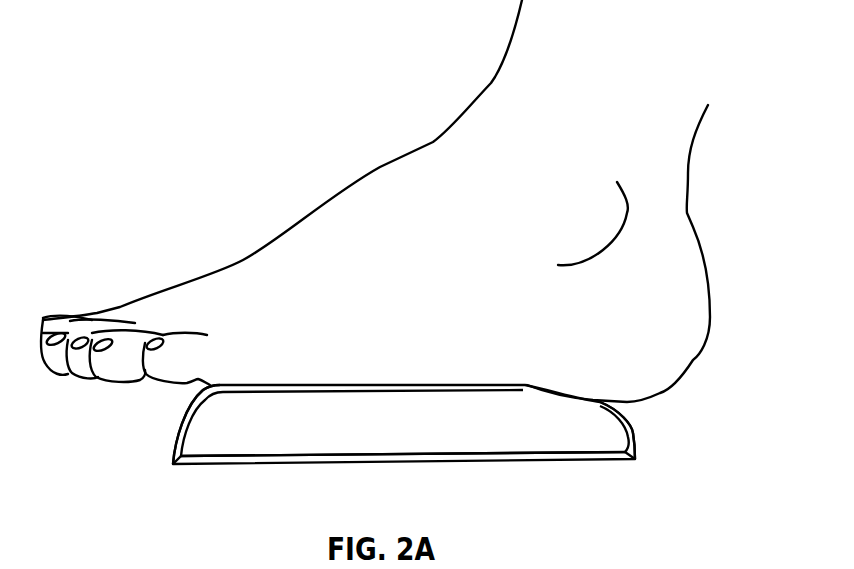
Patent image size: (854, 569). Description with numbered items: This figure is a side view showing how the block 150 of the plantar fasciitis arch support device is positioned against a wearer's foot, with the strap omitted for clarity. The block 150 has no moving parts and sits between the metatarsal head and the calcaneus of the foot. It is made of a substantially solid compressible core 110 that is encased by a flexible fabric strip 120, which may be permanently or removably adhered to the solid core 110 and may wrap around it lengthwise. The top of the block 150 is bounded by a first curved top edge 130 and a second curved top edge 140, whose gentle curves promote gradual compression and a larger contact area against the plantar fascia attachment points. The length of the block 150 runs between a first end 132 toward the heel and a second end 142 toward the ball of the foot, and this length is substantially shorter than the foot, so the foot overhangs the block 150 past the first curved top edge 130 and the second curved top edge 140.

The solid core 110 is at (260, 423).
The fabric strip 120 is at (622, 460).
The first curved top edge 130 is at (610, 394).
The first end 132 is at (637, 458).
The second curved top edge 140 is at (199, 394).
The second end 142 is at (173, 462).
The block 150 is at (688, 437).